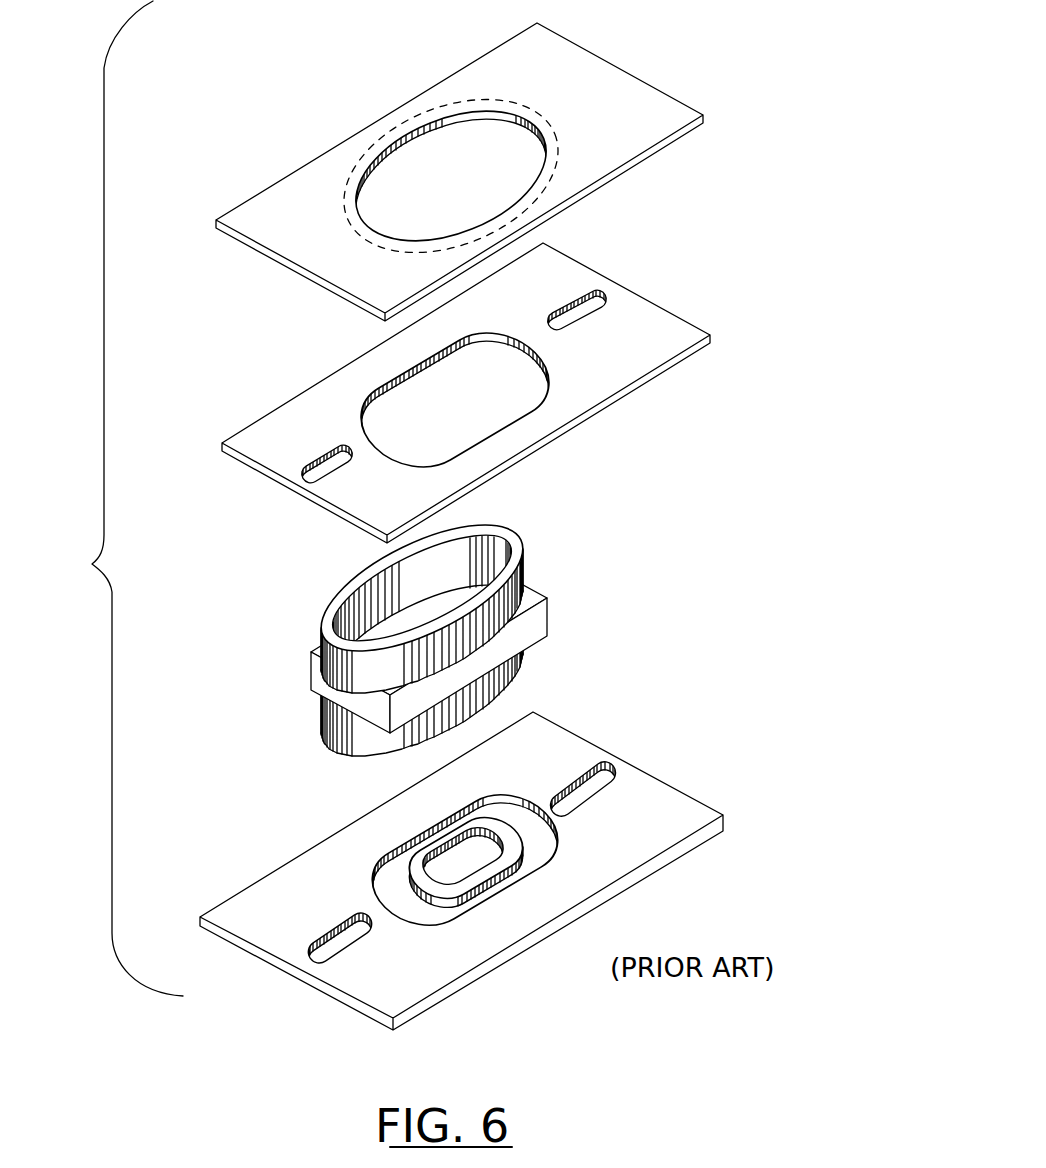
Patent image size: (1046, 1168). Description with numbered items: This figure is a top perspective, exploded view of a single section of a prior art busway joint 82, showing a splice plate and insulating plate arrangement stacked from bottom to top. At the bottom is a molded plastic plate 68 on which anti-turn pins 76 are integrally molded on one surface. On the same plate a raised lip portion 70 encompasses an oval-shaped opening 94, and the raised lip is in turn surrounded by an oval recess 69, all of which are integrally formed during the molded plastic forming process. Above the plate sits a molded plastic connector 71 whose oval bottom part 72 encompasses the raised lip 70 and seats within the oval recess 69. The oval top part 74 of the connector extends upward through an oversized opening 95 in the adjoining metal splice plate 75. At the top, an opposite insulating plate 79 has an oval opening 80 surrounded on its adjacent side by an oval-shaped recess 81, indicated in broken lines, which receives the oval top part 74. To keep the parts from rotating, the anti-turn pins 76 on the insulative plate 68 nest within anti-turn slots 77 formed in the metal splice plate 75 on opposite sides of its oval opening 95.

The molded plastic plate 68 is at (473, 871).
The oval recess 69 is at (382, 883).
The raised lip portion 70 is at (465, 851).
The molded plastic connector 71 is at (555, 610).
The oval bottom part 72 is at (538, 670).
The oval top part 74 is at (517, 532).
The metal splice plate 75 is at (468, 382).
The anti-turn pins 76 is at (337, 953).
The anti-turn slots 77 is at (583, 300).
The insulating plate 79 is at (480, 163).
The oval opening 80 is at (487, 133).
The oval-shaped recess 81 is at (553, 128).
The busway joint 82 is at (66, 577).
The oval-shaped opening 94 is at (467, 857).
The oversized opening 95 is at (500, 383).